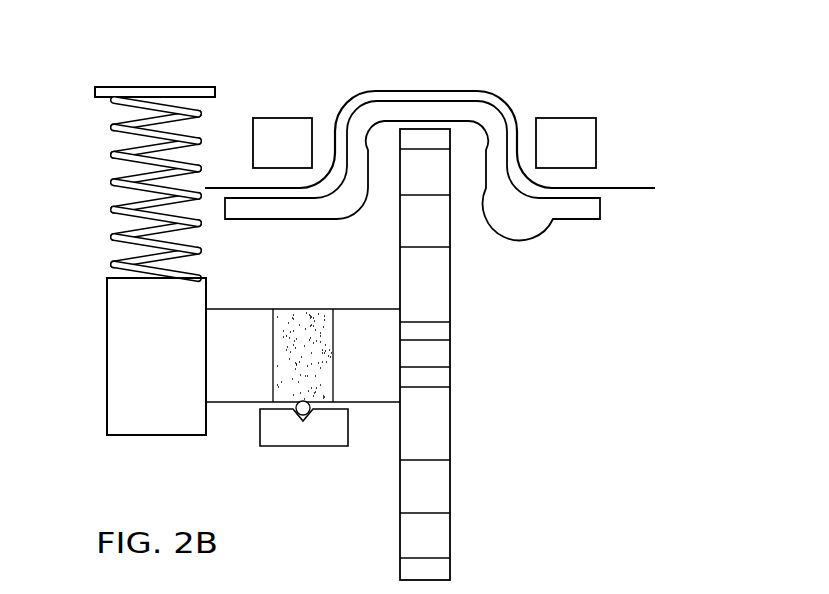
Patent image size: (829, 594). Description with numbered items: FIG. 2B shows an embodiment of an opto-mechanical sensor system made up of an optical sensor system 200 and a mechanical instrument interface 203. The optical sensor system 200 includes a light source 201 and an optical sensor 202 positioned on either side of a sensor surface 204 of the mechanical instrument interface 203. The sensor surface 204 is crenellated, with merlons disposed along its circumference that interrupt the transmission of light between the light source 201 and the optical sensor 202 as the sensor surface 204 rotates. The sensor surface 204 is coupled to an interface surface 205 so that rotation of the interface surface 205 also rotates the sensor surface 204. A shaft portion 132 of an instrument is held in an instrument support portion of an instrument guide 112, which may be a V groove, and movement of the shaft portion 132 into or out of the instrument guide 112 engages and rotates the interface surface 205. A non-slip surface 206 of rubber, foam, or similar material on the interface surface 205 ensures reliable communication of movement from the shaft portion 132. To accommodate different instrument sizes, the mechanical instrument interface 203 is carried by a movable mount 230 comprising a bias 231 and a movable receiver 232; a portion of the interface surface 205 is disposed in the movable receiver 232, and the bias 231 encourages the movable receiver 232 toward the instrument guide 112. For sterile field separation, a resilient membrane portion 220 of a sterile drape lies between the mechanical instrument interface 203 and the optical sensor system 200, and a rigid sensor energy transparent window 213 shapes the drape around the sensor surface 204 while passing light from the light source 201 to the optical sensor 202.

The optical sensor system 200 is at (563, 63).
The light source 201 is at (300, 157).
The optical sensor 202 is at (583, 157).
The mechanical instrument interface 203 is at (531, 445).
The sensor surface 204 is at (442, 283).
The interface surface 205 is at (247, 315).
The non-slip surface 206 is at (302, 313).
The instrument guide 112 is at (284, 448).
The shaft portion 132 is at (311, 413).
The sensor energy transparent window 213 is at (563, 220).
The resilient membrane portion 220 is at (635, 187).
The movable mount 230 is at (114, 84).
The bias 231 is at (112, 177).
The movable receiver 232 is at (115, 356).